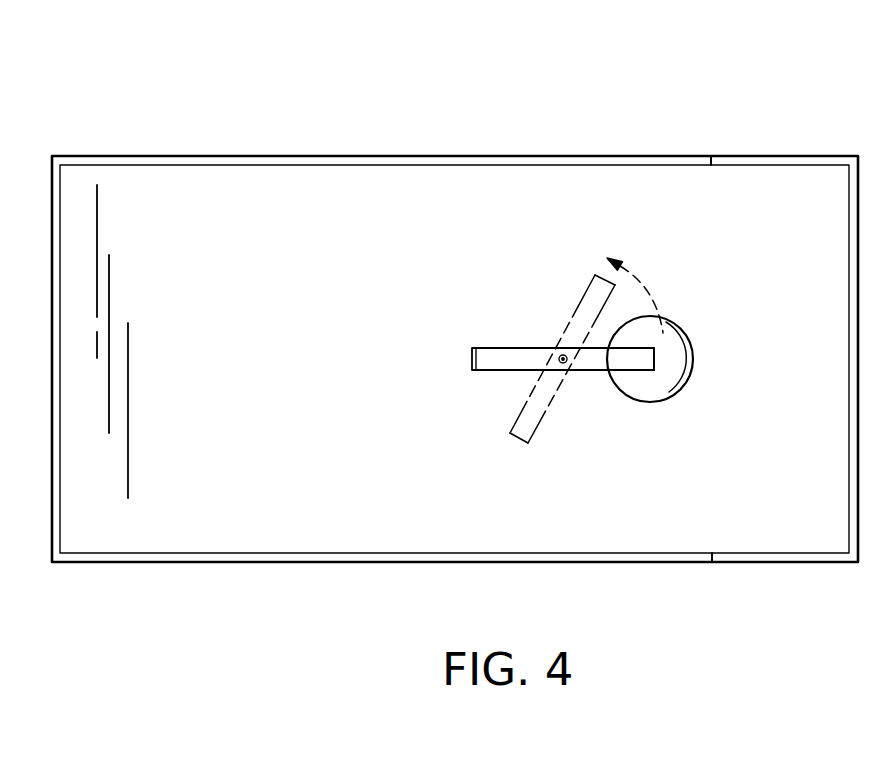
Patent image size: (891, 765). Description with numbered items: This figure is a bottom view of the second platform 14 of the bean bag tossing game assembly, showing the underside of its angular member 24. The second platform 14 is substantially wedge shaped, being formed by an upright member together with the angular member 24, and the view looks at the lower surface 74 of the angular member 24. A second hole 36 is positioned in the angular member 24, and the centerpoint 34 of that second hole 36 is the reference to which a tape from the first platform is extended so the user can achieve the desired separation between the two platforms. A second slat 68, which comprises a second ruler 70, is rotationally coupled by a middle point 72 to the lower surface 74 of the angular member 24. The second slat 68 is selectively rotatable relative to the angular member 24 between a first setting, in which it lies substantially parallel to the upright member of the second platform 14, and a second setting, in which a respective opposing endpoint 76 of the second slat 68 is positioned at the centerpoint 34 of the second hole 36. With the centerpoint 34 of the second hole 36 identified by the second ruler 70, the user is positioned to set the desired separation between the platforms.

The second platform 14 is at (480, 73).
The angular member 24 is at (283, 220).
The centerpoint 34 is at (667, 362).
The second hole 36 is at (688, 363).
The second slat 68 is at (607, 360).
The second ruler 70 is at (628, 360).
The middle point 72 is at (563, 362).
The lower surface 74 is at (351, 334).
The opposing endpoint 76 is at (472, 348).